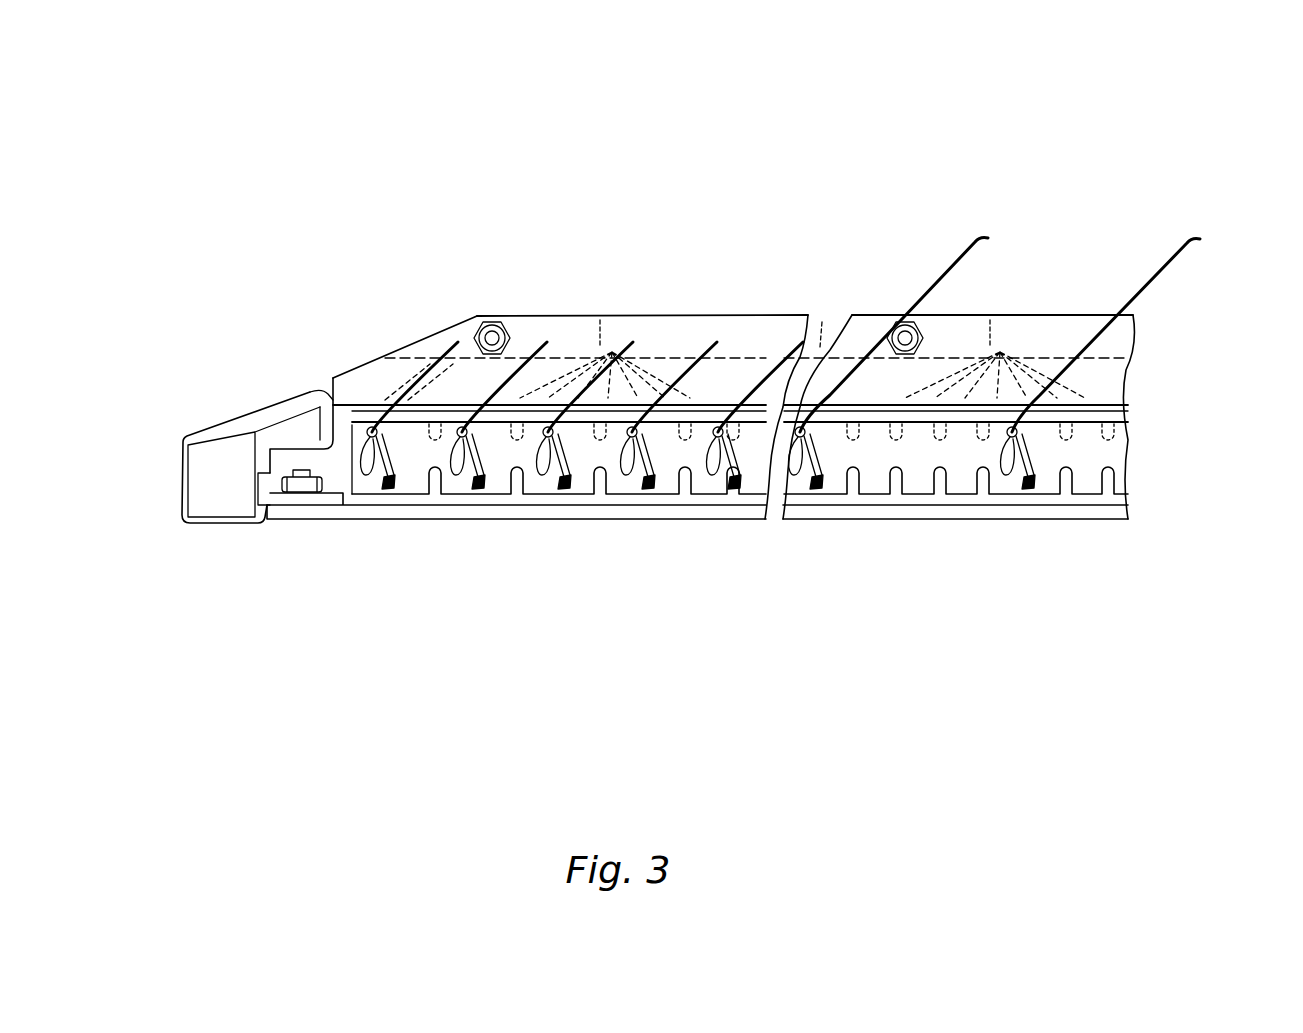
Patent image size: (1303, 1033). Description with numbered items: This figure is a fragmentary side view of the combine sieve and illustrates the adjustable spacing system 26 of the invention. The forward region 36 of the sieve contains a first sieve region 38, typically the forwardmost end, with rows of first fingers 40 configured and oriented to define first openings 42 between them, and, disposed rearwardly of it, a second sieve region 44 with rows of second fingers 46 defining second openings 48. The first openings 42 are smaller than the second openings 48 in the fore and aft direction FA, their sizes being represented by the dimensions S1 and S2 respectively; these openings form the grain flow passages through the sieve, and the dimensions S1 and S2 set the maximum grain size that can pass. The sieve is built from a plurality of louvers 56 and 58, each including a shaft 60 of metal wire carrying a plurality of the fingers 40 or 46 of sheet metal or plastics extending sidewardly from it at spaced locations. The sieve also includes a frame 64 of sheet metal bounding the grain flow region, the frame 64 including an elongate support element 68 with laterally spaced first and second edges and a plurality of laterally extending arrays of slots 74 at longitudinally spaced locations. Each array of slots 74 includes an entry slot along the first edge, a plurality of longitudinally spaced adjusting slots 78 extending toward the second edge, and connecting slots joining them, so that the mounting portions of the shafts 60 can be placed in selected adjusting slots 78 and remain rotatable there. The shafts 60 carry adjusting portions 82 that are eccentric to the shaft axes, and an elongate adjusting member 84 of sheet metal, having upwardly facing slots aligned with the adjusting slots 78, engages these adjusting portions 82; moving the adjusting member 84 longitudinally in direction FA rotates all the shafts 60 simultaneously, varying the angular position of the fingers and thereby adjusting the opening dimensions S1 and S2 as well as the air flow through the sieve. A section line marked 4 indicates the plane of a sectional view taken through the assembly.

The adjustable spacing system 26 is at (285, 277).
The forward region 36 is at (341, 373).
The first sieve region 38 is at (292, 680).
The first fingers 40 is at (433, 352).
The first openings 42 is at (468, 345).
The second sieve region 44 is at (767, 678).
The second fingers 46 is at (947, 268).
The second openings 48 is at (1066, 296).
The louver 56 is at (574, 331).
The louver 58 is at (1037, 302).
The shaft 60 is at (687, 544).
The frame 64 is at (208, 528).
The support element 68 is at (1128, 363).
The slots 74 is at (611, 340).
The adjusting slots 78 is at (364, 474).
The adjusting portions 82 is at (385, 490).
The adjusting member 84 is at (917, 519).
The dimension S1 is at (713, 347).
The dimension S2 is at (1156, 268).
The fore and aft direction FA is at (752, 96).
The section line 4- 4 is at (592, 300).